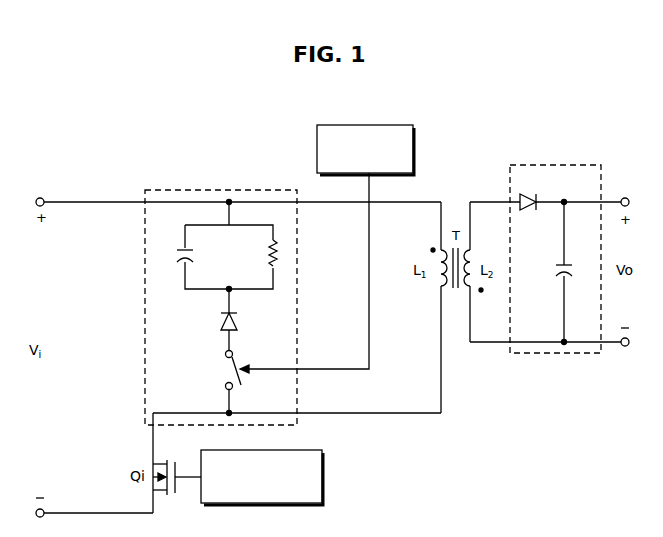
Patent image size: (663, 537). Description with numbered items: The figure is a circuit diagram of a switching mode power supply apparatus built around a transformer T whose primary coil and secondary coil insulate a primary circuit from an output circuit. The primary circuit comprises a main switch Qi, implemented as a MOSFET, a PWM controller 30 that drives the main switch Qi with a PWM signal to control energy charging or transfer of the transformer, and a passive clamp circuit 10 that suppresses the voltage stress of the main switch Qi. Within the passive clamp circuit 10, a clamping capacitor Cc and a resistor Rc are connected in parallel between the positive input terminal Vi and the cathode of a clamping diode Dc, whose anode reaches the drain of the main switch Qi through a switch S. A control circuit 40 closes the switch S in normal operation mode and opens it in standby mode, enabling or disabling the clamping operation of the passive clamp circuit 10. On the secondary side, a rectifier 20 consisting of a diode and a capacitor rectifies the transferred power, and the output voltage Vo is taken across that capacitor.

The passive clamp circuit 10 is at (180, 190).
The rectifier 20 is at (552, 165).
The PWM controller 30 is at (322, 461).
The control circuit 40 is at (385, 125).